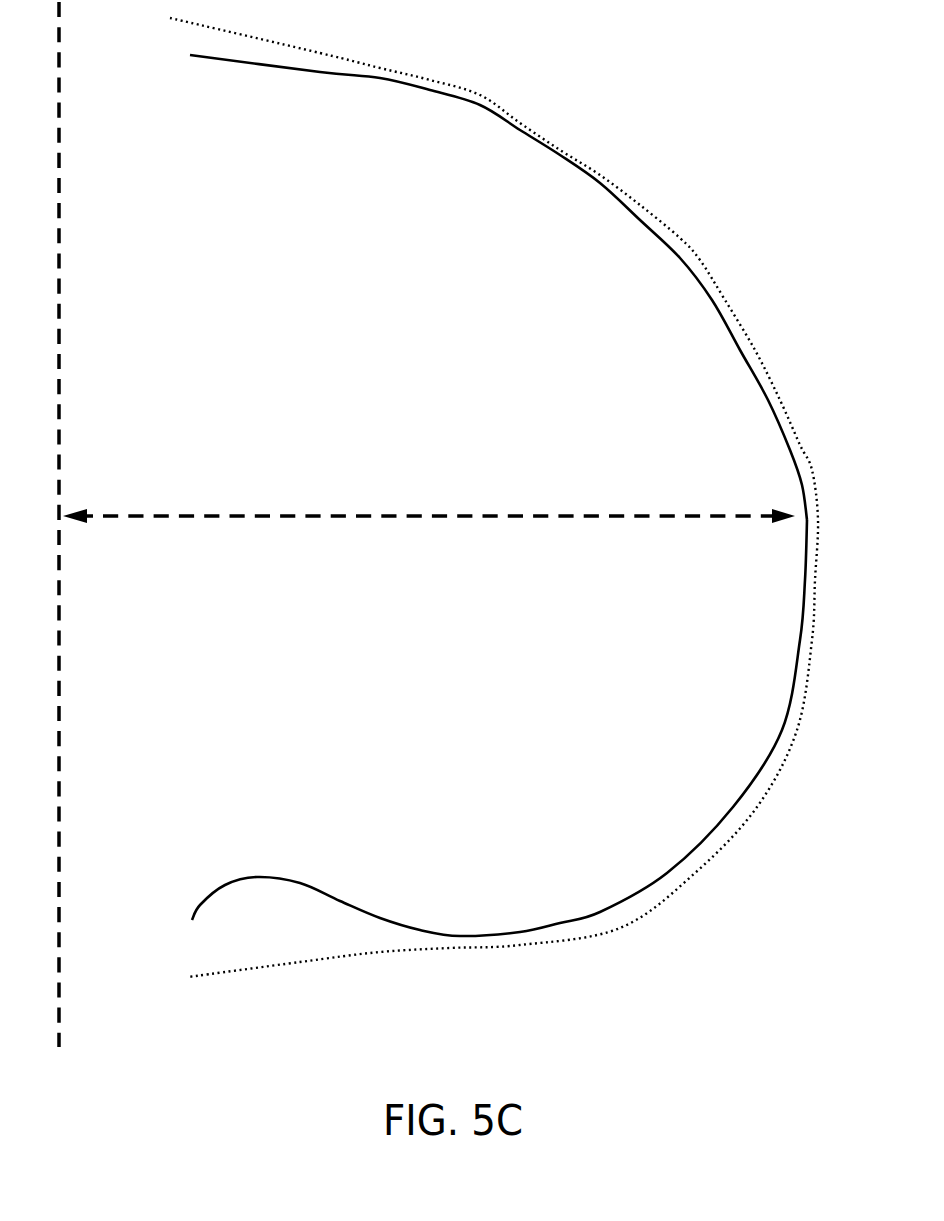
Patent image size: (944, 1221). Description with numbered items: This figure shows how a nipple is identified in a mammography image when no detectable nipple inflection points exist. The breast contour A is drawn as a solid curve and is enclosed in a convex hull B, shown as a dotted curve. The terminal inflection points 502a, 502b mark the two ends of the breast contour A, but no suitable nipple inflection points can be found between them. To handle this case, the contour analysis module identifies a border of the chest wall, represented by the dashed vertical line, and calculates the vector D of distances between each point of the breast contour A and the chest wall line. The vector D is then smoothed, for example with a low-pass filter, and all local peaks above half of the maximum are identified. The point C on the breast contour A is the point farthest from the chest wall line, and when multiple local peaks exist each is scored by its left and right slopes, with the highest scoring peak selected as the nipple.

The terminal inflection point 502a is at (246, 82).
The terminal inflection point 502b is at (248, 852).
The breast contour A is at (174, 918).
The convex hull B is at (166, 978).
The point C is at (832, 520).
The vector of distances D is at (429, 492).